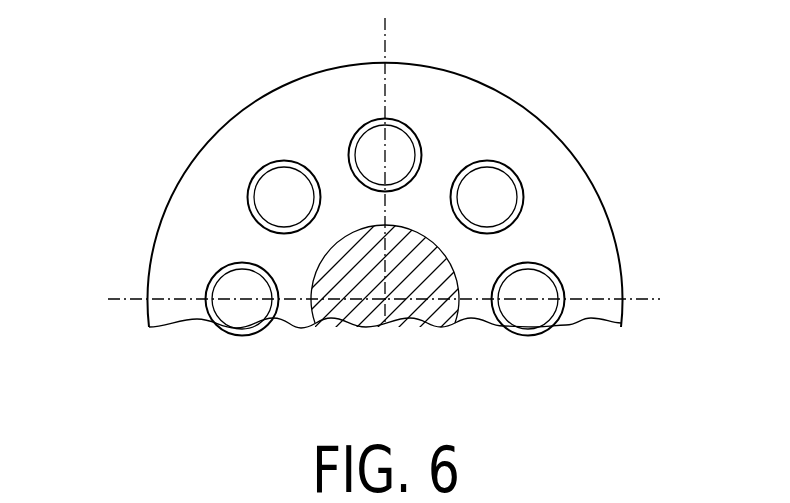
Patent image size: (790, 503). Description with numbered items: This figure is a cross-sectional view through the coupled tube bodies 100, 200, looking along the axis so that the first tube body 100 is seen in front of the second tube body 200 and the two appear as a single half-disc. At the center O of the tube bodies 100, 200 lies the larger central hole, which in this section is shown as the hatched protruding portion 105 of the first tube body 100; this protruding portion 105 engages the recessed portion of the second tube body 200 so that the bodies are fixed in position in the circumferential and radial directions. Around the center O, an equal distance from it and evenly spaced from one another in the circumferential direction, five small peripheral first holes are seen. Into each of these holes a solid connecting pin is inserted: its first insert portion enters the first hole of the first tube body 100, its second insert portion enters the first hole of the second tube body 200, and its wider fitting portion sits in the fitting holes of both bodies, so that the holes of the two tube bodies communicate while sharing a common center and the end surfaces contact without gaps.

The first tube body 100 is at (399, 195).
The second tube body 200 is at (522, 94).
The protruding portion 105 is at (358, 313).
The center O is at (388, 301).